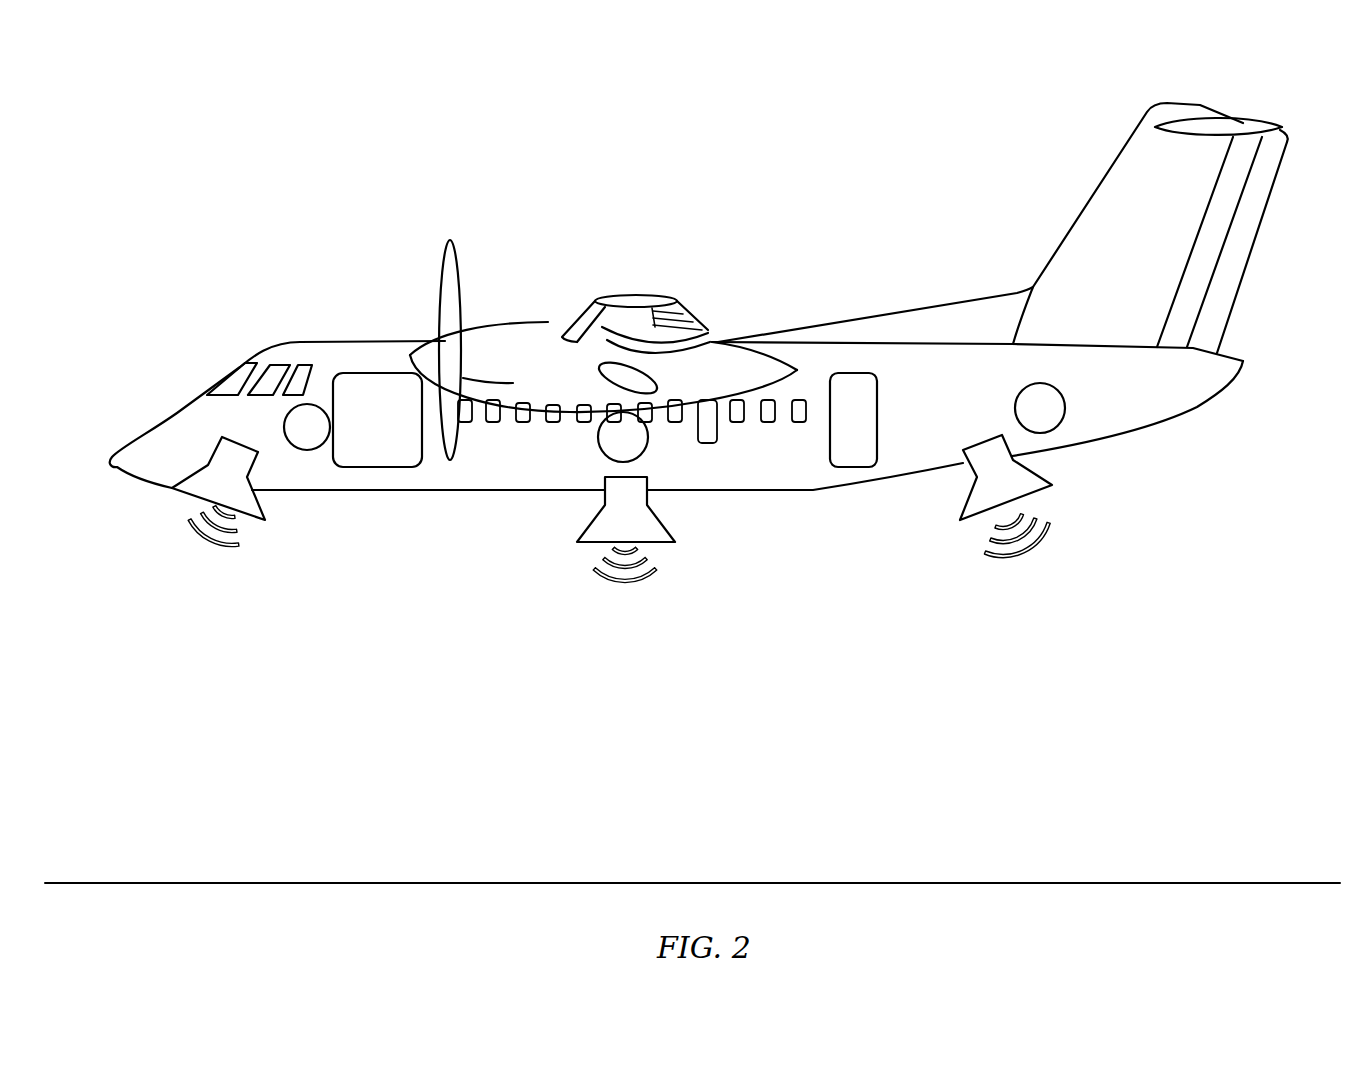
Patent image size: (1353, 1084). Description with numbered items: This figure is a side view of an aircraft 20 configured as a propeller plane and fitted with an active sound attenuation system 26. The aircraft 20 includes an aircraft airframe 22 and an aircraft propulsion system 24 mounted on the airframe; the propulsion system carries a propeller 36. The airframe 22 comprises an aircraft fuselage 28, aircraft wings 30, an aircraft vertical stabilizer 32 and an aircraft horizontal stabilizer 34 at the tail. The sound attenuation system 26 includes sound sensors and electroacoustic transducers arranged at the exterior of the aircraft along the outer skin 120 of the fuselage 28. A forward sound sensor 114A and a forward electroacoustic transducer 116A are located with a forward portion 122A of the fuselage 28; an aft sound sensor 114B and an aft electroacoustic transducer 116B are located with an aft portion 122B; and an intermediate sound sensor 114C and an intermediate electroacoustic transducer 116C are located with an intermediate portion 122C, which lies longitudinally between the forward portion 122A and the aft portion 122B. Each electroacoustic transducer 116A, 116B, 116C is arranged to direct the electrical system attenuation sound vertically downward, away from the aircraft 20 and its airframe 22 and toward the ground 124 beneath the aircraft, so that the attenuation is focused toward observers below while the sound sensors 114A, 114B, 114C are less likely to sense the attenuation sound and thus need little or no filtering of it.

The aircraft 20 is at (181, 181).
The aircraft airframe 22 is at (250, 336).
The aircraft propulsion system 24 is at (585, 311).
The sound attenuation system 26 is at (194, 575).
The aircraft fuselage 28 is at (330, 340).
The aircraft wing 30 is at (636, 295).
The aircraft vertical stabilizer 32 is at (1087, 195).
The aircraft horizontal stabilizer 34 is at (1215, 117).
The propeller 36 is at (460, 277).
The forward sound sensor 114A is at (307, 450).
The aft sound sensor 114B is at (1065, 408).
The intermediate sound sensor 114C is at (598, 433).
The forward electroacoustic transducer 116A is at (265, 520).
The aft electroacoustic transducer 116B is at (960, 520).
The intermediate electroacoustic transducer 116C is at (665, 543).
The outer skin 120 is at (793, 465).
The forward portion 122A is at (389, 553).
The aft portion 122B is at (894, 578).
The intermediate portion 122C is at (571, 570).
The ground 124 is at (793, 882).